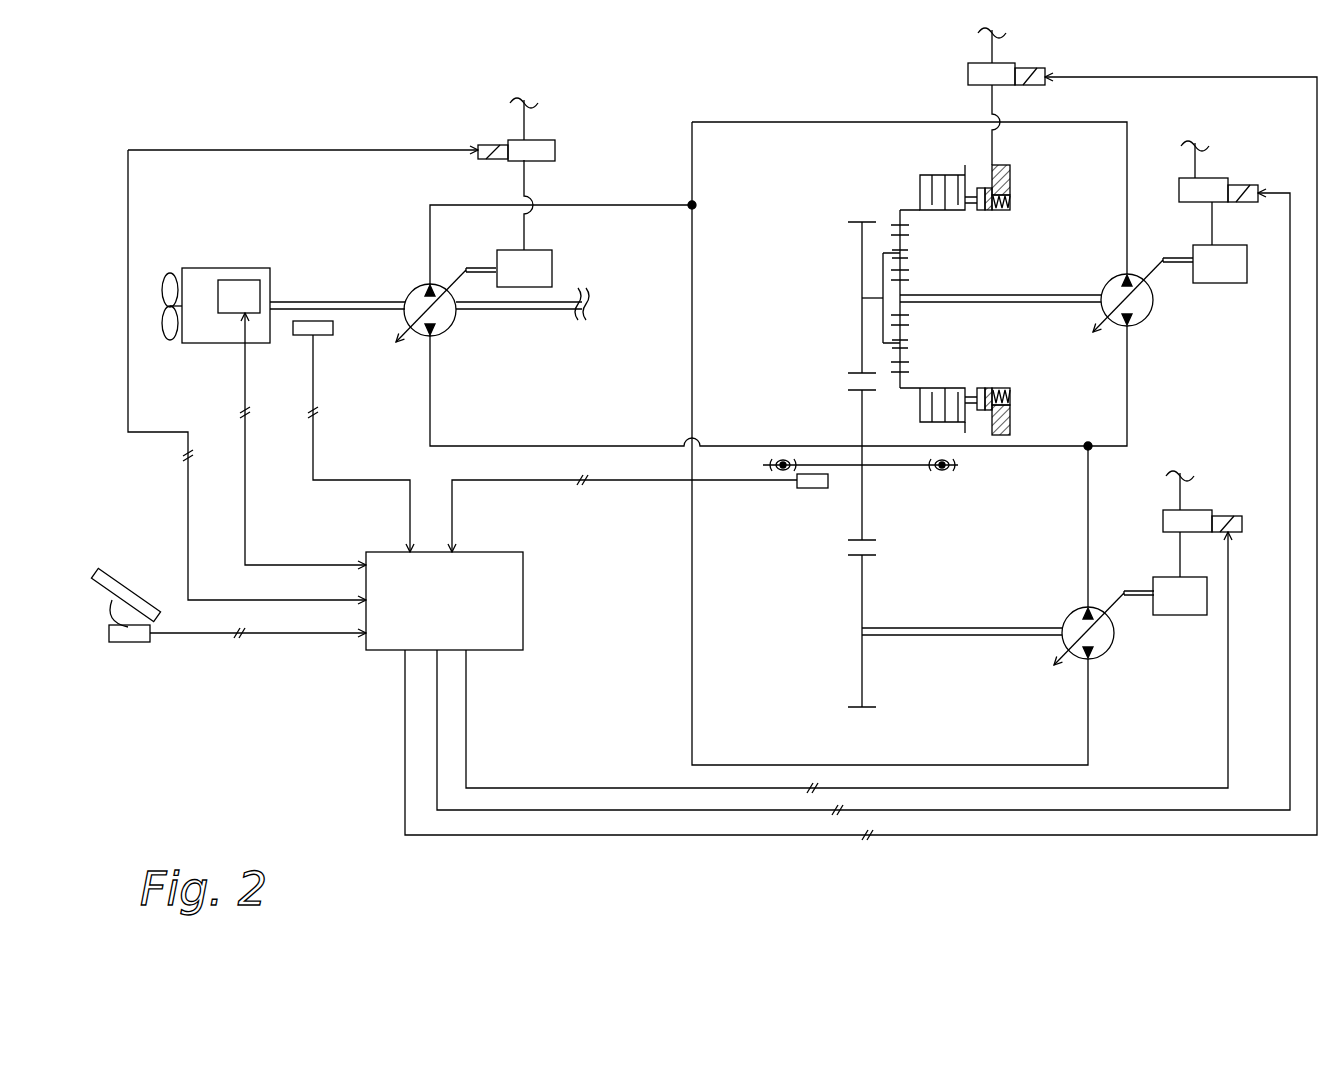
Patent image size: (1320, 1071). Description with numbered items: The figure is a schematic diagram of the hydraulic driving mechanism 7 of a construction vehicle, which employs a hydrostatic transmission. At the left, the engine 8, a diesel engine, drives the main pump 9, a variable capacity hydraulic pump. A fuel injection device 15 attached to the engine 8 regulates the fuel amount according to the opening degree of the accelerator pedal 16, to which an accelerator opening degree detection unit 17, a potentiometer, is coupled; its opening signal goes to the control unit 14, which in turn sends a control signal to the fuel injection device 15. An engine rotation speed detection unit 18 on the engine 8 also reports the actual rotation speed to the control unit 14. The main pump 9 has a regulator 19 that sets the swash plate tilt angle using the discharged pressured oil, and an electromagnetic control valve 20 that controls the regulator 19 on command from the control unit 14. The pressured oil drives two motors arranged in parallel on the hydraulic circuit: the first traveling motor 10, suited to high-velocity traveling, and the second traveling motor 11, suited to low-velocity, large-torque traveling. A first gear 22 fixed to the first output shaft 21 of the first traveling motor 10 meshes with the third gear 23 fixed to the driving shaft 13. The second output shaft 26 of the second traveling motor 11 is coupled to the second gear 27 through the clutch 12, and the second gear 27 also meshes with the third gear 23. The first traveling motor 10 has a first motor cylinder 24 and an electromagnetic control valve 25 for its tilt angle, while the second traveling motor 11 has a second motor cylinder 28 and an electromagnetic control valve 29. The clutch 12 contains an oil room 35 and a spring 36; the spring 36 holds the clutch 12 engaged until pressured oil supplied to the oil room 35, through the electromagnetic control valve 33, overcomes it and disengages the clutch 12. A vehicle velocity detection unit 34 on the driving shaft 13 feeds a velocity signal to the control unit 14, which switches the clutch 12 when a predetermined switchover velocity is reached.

The hydraulic driving mechanism 7 is at (290, 92).
The engine 8 is at (200, 277).
The main pump 9 is at (418, 292).
The first traveling motor 10 is at (1070, 620).
The second traveling motor 11 is at (1113, 290).
The clutch 12 is at (945, 162).
The driving shaft 13 is at (890, 467).
The control unit 14 is at (523, 606).
The fuel injection device 15 is at (238, 288).
The accelerator pedal 16 is at (120, 595).
The accelerator opening degree detection unit 17 is at (130, 643).
The engine rotation speed detection unit 18 is at (333, 328).
The regulator 19 is at (552, 266).
The electromagnetic control valve 20 is at (555, 150).
The first output shaft 21 is at (955, 636).
The first gear 22 is at (861, 607).
The third gear 23 is at (861, 425).
The first motor cylinder 24 is at (1180, 616).
The electromagnetic control valve 25 is at (1162, 522).
The second output shaft 26 is at (1023, 303).
The second gear 27 is at (861, 265).
The second motor cylinder 28 is at (1220, 284).
The electromagnetic control valve 29 is at (1185, 192).
The electromagnetic control valve 33 is at (968, 74).
The vehicle velocity detection unit 34 is at (812, 489).
The oil room 35 is at (979, 212).
The spring 36 is at (1003, 212).